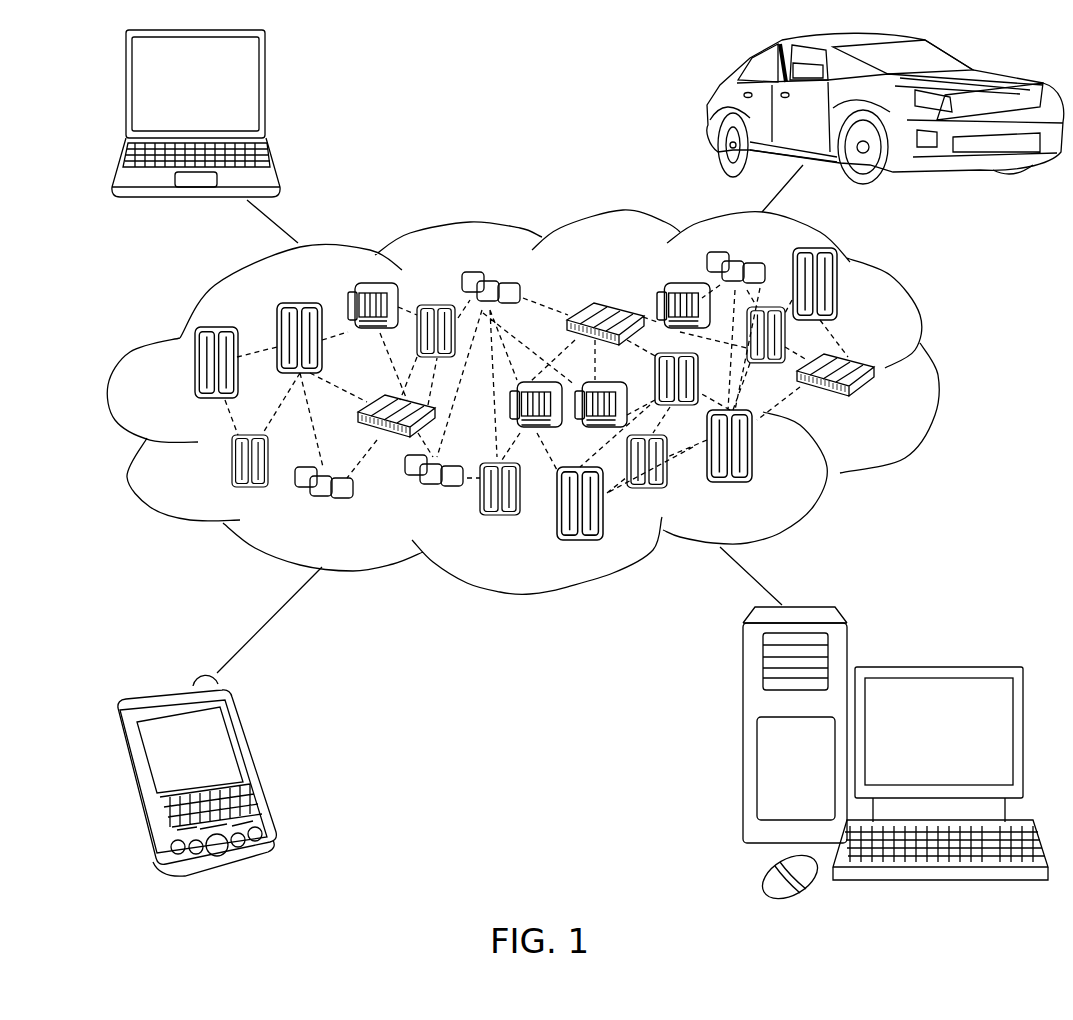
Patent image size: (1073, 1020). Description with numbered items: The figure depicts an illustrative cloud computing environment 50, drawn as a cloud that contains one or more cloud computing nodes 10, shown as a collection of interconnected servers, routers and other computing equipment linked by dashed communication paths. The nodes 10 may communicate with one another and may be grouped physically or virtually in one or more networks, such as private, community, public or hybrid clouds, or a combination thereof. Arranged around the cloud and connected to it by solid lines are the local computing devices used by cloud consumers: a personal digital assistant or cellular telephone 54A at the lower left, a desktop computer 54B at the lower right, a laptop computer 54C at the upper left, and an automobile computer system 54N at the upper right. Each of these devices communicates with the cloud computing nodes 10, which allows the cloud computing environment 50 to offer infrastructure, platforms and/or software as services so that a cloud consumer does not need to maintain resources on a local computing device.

The cloud computing nodes 10 is at (880, 404).
The cloud computing environment 50 is at (937, 372).
The personal digital assistant (PDA) or cellular telephone 54A is at (255, 768).
The desktop computer 54B is at (937, 665).
The laptop computer 54C is at (267, 92).
The automobile computer system 54N is at (717, 110).